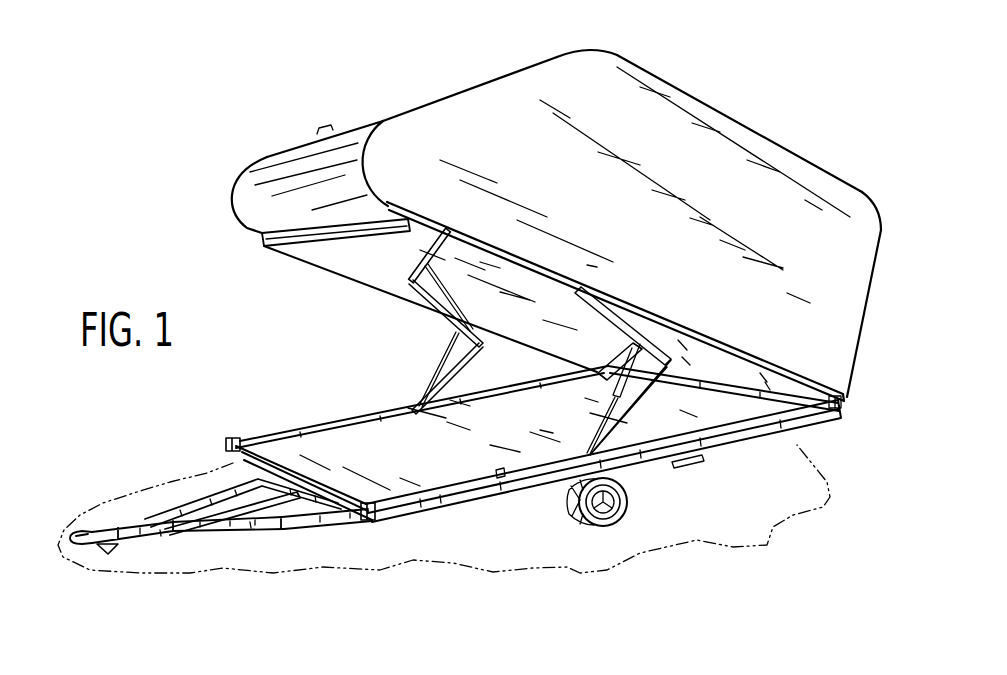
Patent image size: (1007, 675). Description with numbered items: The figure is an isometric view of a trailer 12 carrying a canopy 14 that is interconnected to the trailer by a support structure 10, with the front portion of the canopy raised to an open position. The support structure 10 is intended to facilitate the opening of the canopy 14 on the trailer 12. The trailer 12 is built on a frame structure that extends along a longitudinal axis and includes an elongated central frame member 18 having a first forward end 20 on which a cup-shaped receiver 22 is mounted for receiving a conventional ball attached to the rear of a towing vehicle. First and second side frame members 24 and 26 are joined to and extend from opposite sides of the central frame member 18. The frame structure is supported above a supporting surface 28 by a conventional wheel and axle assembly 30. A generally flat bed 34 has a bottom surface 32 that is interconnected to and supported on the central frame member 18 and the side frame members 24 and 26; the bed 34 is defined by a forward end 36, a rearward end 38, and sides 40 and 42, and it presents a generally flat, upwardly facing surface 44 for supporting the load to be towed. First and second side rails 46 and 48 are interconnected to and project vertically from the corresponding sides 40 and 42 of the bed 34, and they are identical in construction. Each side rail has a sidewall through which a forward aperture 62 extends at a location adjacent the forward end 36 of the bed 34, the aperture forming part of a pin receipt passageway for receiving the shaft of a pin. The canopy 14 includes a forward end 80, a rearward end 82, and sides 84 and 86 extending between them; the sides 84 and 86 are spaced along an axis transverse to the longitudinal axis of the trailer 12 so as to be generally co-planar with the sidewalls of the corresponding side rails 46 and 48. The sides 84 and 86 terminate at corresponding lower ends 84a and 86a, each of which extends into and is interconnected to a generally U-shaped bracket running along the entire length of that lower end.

The support structure 10 is at (430, 316).
The trailer 12 is at (240, 538).
The canopy 14 is at (402, 100).
The central frame member 18 is at (233, 490).
The first forward end 20 is at (123, 549).
The cup-shaped receiver 22 is at (84, 549).
The first side frame member 24 is at (207, 508).
The second side frame member 26 is at (288, 530).
The supporting surface 28 is at (445, 552).
The wheel and axle assembly 30 is at (586, 534).
The bottom surface 32 is at (689, 468).
The bed 34 is at (370, 446).
The forward end 36 is at (342, 516).
The rearward end 38 is at (708, 382).
The side 40 is at (266, 432).
The side 42 is at (428, 522).
The upwardly facing surface 44 is at (558, 427).
The first side rail 46 is at (306, 470).
The second side rail 48 is at (500, 478).
The forward aperture 62 is at (231, 455).
The forward end 80 is at (262, 155).
The rearward end 82 is at (888, 251).
The side 84 is at (350, 258).
The lower end 84a is at (312, 254).
The side 86 is at (605, 67).
The lower end 86a is at (795, 380).